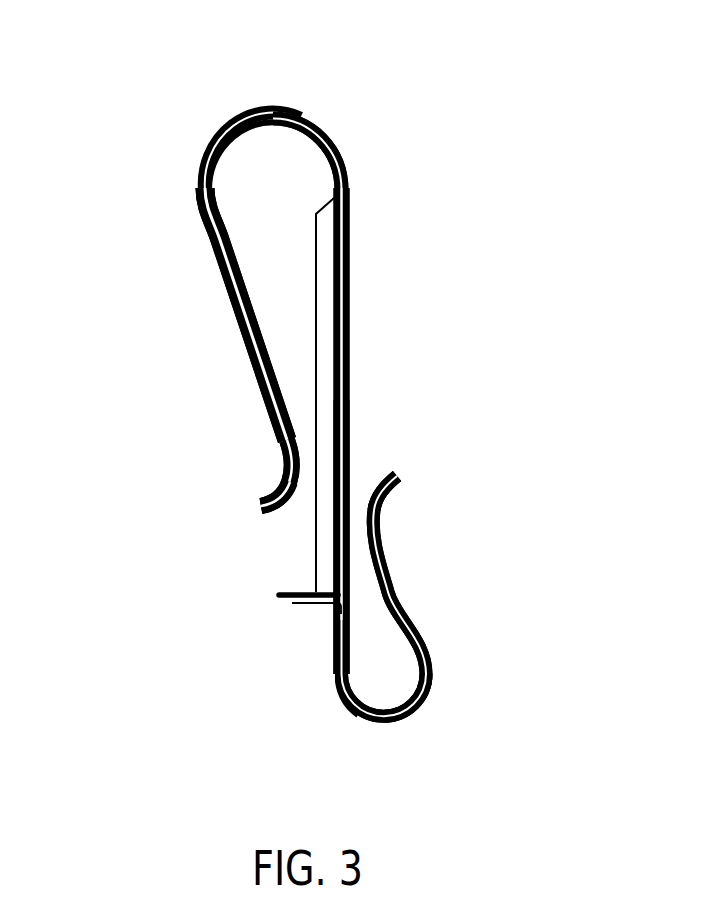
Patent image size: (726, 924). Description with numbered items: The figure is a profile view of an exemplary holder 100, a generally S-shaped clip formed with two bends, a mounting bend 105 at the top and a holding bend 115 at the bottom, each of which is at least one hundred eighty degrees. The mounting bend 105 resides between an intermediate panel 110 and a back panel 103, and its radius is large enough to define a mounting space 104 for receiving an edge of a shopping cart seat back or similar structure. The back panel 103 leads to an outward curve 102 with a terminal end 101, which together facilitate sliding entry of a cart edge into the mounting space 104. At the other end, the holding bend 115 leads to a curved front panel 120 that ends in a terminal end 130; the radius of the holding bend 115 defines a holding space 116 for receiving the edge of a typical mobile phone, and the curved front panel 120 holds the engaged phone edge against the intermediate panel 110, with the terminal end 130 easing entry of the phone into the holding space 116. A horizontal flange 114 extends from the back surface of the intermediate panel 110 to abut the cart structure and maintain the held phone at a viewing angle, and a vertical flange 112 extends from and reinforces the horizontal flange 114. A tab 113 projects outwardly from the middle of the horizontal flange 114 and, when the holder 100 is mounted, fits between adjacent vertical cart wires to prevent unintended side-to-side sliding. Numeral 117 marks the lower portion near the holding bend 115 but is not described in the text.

The holder 100 is at (218, 130).
The terminal end 101 is at (263, 498).
The outward curve 102 is at (293, 463).
The back panel 103 is at (217, 262).
The mounting space 104 is at (266, 155).
The mounting bend 105 is at (313, 115).
The intermediate panel 110 is at (345, 200).
The vertical flange 112 is at (328, 536).
The tab 113 is at (272, 597).
The horizontal flange 114 is at (308, 603).
The holding bend 115 is at (405, 718).
The holding space 116 is at (379, 665).
The lower portion 117 is at (338, 656).
The curved front panel 120 is at (386, 552).
The terminal end 130 is at (403, 478).